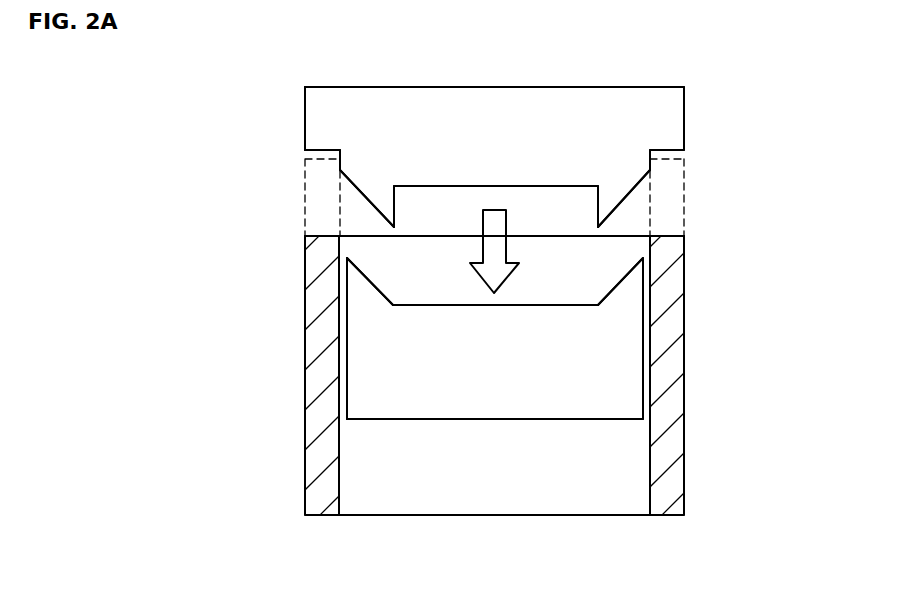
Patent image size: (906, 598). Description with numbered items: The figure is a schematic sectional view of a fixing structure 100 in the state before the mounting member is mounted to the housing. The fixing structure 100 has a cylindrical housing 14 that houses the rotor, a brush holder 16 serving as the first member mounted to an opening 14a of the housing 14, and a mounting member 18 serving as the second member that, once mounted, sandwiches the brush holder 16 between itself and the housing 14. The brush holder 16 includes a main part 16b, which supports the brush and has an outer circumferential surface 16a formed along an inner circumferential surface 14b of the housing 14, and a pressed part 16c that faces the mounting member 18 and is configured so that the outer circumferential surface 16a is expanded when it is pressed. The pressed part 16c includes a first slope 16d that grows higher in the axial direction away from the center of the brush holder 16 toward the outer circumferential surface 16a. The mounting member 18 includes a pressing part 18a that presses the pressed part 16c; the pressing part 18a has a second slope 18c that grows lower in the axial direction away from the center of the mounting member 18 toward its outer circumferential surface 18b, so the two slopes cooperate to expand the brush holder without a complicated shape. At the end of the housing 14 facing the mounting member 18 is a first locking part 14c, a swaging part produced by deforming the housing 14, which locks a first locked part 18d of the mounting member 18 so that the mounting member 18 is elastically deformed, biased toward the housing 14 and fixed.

The fixing structure 100 is at (252, 488).
The housing 14 is at (689, 397).
The opening 14a is at (612, 258).
The inner circumferential surface 14b is at (340, 471).
The first locking part 14c is at (320, 177).
The brush holder 16 is at (612, 373).
The outer circumferential surface 16a is at (347, 373).
The main part 16b is at (478, 419).
The pressed part 16c is at (363, 297).
The first slope 16d is at (373, 288).
The mounting member 18 is at (596, 122).
The pressing part 18a is at (383, 200).
The outer circumferential surface 18b is at (305, 128).
The second slope 18c is at (377, 208).
The first locked part 18d is at (322, 118).